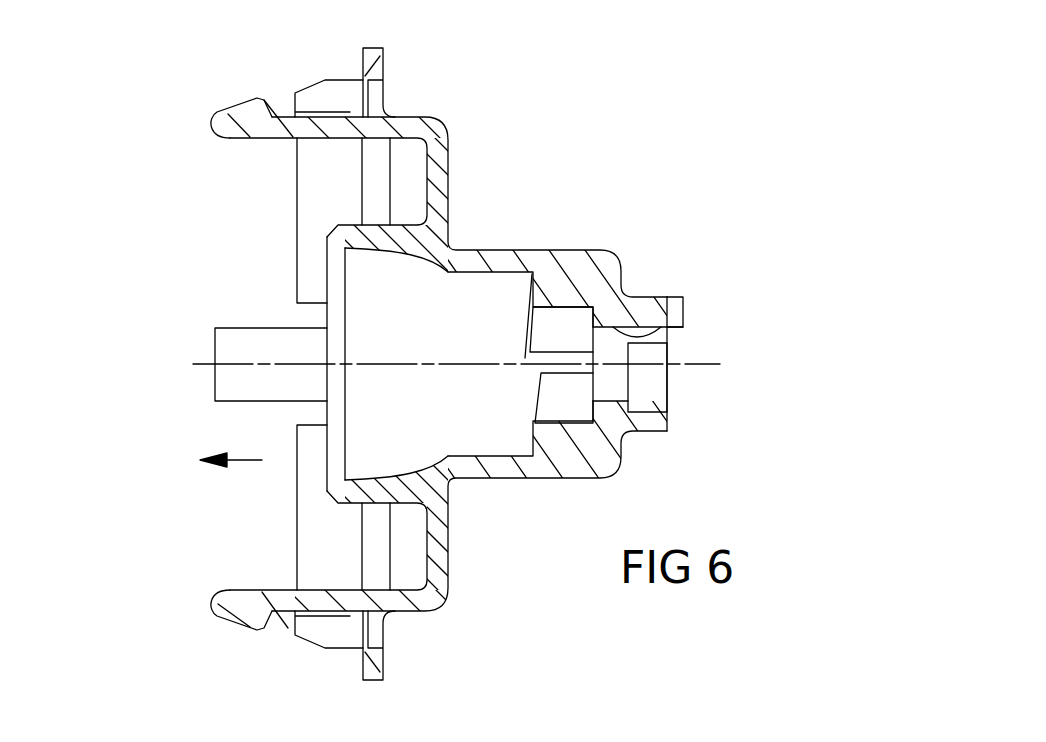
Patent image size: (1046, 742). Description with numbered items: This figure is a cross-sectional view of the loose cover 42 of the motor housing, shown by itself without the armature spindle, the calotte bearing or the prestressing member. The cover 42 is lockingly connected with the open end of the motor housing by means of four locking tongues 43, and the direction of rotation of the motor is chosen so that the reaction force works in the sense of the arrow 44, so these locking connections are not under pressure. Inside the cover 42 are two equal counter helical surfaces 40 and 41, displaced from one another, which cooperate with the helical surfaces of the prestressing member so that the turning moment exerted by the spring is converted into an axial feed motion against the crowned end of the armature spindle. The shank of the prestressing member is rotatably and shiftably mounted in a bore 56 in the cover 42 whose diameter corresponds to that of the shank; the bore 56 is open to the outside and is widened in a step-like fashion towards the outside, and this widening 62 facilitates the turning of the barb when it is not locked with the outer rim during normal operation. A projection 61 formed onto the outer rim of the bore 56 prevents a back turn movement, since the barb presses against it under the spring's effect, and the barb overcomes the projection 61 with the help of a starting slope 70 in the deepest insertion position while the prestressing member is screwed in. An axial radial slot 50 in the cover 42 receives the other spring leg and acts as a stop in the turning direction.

The counter helical surface 40 is at (533, 307).
The counter helical surface 41 is at (535, 425).
The cover 42 is at (424, 127).
The locking tongue 43 is at (249, 127).
The arrow 44 is at (231, 473).
The axial radial slot 50 is at (655, 346).
The bore 56 is at (682, 328).
The projection 61 is at (674, 306).
The widening 62 is at (647, 408).
The starting slope 70 is at (673, 337).